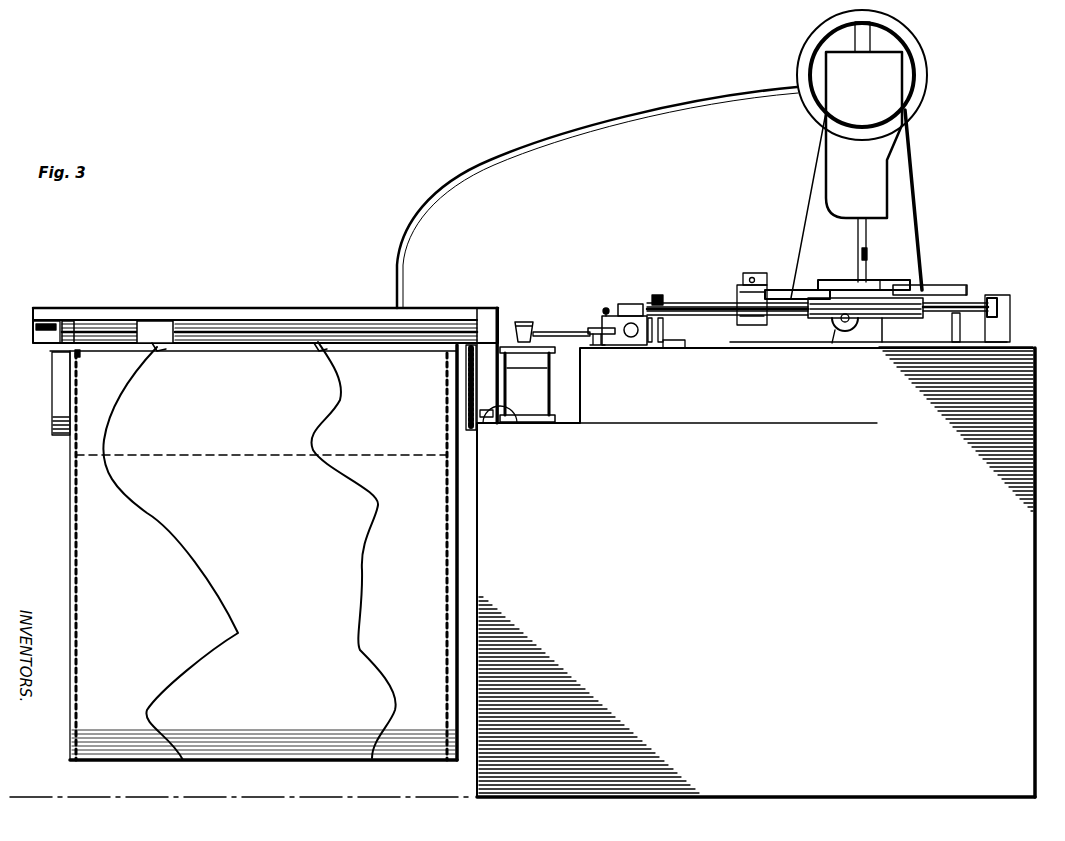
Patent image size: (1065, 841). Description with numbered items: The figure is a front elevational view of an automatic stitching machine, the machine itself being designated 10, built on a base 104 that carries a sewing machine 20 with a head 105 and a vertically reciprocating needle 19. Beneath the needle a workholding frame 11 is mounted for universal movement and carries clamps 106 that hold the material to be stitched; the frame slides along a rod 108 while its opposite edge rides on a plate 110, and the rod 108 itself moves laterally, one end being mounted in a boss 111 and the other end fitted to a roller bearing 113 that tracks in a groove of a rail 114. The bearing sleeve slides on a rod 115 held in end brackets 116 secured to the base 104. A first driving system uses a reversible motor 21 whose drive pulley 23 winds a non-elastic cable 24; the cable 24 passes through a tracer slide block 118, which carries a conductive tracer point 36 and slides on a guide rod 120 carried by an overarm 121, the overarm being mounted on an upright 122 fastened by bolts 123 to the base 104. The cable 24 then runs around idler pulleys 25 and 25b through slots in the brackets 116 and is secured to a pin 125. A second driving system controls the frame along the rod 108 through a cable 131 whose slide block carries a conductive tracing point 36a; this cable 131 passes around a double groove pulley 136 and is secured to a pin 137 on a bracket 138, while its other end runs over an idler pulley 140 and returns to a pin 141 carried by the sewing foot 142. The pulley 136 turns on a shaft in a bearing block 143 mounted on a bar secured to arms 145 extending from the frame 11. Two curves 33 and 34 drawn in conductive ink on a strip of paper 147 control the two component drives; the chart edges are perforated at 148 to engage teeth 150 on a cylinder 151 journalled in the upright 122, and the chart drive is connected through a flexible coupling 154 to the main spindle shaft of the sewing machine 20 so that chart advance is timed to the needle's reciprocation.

The presser plate 10 is at (796, 280).
The workholding frame 11 is at (808, 298).
The needle 19 is at (858, 270).
The sewing machine 20 is at (912, 133).
The reversible motor 21 is at (530, 387).
The drive pulley 23 is at (525, 322).
The cable 24 is at (498, 310).
The idler pulley 25 is at (597, 345).
The idler pulley 25b is at (599, 328).
The curve 33 is at (167, 523).
The curve 34 is at (367, 478).
The conductive tracer point 36 is at (160, 347).
The conductive tracing point 36a is at (325, 345).
The base 104 is at (1018, 384).
The head 105 is at (880, 190).
The clamps 106 is at (880, 280).
The rod 108 is at (690, 305).
The plate 110 is at (945, 285).
The boss 111 is at (630, 304).
The roller bearing 113 is at (995, 298).
The rail 114 is at (1012, 312).
The rod 115 is at (636, 335).
The end brackets 116 is at (625, 340).
The tracer slide block 118 is at (150, 321).
The guide rod 120 is at (345, 320).
The overarm 121 is at (270, 308).
The upright 122 is at (468, 383).
The bolts 123 is at (505, 425).
The pin 125 is at (606, 309).
The cable 131 is at (800, 344).
The double groove pulley 136 is at (740, 290).
The pin 137 is at (657, 295).
The bracket 138 is at (690, 345).
The idler pulley 140 is at (855, 330).
The pin 141 is at (838, 333).
The sewing foot 142 is at (883, 330).
The bearing block 143 is at (749, 273).
The arms 145 is at (760, 275).
The strip of paper 147 is at (85, 498).
The perforations 148 is at (80, 518).
The teeth 150 is at (80, 362).
The cylinder 151 is at (52, 388).
The flexible coupling 154 is at (631, 124).